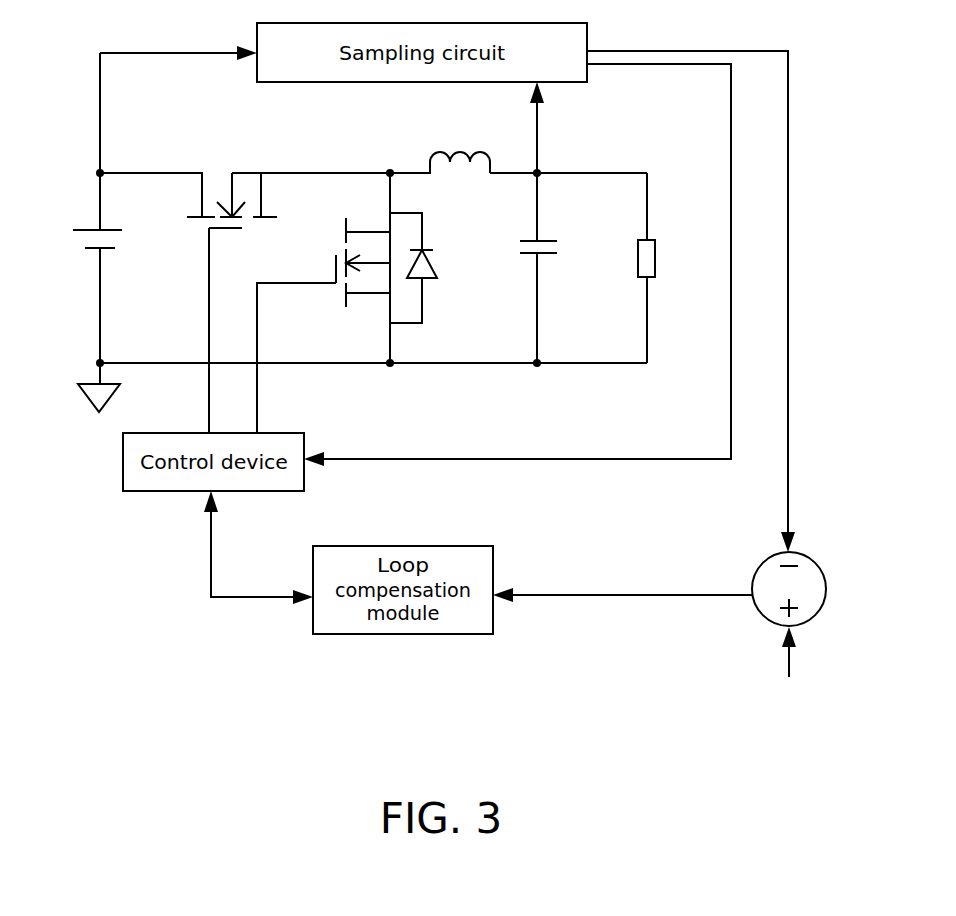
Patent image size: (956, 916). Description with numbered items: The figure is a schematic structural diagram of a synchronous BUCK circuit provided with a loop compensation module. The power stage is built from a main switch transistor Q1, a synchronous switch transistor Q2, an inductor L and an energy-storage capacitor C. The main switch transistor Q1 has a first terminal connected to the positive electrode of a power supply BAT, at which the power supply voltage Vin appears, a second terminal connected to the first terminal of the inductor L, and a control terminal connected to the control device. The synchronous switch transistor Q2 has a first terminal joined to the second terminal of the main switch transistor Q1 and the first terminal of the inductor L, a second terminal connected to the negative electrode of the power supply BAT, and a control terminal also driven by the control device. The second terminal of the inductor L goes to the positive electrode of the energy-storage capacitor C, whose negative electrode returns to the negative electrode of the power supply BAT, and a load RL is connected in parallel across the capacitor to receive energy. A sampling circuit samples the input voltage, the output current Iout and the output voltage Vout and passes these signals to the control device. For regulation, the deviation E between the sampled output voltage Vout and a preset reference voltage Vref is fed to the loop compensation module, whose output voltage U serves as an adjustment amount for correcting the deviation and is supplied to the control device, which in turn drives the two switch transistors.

The power supply BAT is at (70, 243).
The power supply voltage Vin is at (121, 184).
The main switch transistor Q1 is at (223, 220).
The synchronous switch transistor Q2 is at (365, 268).
The inductor L is at (456, 149).
The energy-storage capacitor C is at (521, 268).
The load RL is at (664, 268).
The output current Iout is at (565, 160).
The output voltage Vout is at (692, 354).
The output voltage of the loop compensation module U is at (261, 580).
The deviation E is at (611, 579).
The reference voltage Vref is at (790, 664).